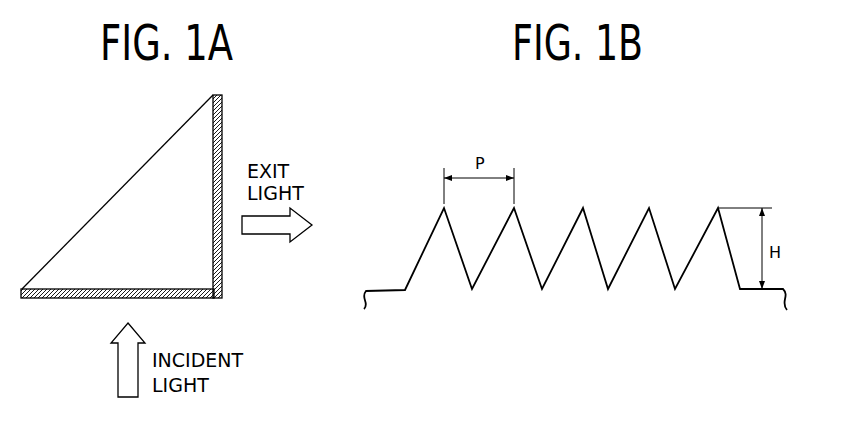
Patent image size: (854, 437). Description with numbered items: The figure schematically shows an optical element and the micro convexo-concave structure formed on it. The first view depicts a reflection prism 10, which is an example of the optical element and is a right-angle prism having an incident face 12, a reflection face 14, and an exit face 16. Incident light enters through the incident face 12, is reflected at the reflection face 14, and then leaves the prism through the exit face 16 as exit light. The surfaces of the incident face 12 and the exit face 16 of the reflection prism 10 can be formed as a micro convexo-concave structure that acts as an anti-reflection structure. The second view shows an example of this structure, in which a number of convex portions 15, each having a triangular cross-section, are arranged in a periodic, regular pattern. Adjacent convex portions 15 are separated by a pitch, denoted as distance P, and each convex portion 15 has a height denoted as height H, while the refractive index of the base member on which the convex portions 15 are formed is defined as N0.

In FIG. 1A, the reflection prism 10 is at (139, 218).
In FIG. 1A, the incident face 12 is at (75, 300).
In FIG. 1A, the reflection face 14 is at (136, 186).
In FIG. 1A, the exit face 16 is at (224, 127).
In FIG. 1B, the convex portions 15 is at (436, 231).